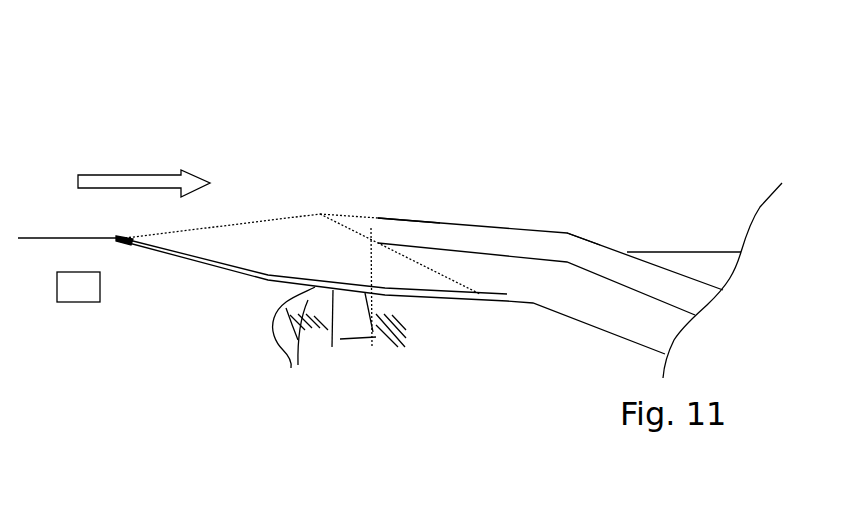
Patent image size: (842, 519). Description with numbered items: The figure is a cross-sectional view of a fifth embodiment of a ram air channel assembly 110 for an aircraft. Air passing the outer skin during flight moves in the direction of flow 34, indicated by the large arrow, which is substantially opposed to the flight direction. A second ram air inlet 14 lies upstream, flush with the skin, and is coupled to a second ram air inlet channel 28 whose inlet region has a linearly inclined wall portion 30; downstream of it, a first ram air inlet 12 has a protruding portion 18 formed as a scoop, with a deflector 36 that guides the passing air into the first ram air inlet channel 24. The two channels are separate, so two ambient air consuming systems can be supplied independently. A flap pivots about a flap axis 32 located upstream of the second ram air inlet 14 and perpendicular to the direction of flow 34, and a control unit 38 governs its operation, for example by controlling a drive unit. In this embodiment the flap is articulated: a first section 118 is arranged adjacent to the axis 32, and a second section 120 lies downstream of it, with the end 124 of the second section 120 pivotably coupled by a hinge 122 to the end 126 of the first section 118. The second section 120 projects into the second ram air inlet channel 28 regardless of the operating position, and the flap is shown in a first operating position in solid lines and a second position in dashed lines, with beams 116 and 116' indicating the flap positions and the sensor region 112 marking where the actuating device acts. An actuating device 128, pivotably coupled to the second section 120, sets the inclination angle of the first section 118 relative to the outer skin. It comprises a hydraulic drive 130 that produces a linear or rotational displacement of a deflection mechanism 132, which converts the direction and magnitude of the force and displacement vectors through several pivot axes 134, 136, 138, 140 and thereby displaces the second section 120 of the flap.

The ram air channel assembly 110 is at (407, 88).
The sensor assembly 112 is at (378, 335).
The first ram air inlet 12 is at (379, 228).
The second ram air inlet 14 is at (243, 242).
The protruding portion 18 is at (548, 201).
The first ram air inlet channel 24 is at (640, 265).
The second ram air inlet channel 28 is at (580, 303).
The linearly inclined wall portion 30 is at (213, 272).
The flap axis 32 is at (128, 247).
The direction of flow 34 is at (127, 175).
The deflector 36 is at (440, 220).
The control unit 38 is at (82, 293).
The light beam 116 is at (292, 193).
The light beam 116' is at (226, 188).
The first section 118 is at (255, 273).
The second section 120 is at (427, 292).
The hinge 122 is at (323, 284).
The end of the second section 124 is at (332, 347).
The end of the first section 126 is at (366, 284).
The actuating device 128 is at (394, 402).
The hydraulic drive 130 is at (298, 366).
The deflection mechanism 132 is at (393, 360).
The pivot axis 134 is at (365, 338).
The pivot axis 136 is at (286, 336).
The pivot axis 138 is at (291, 368).
The pivot axis 140 is at (348, 340).